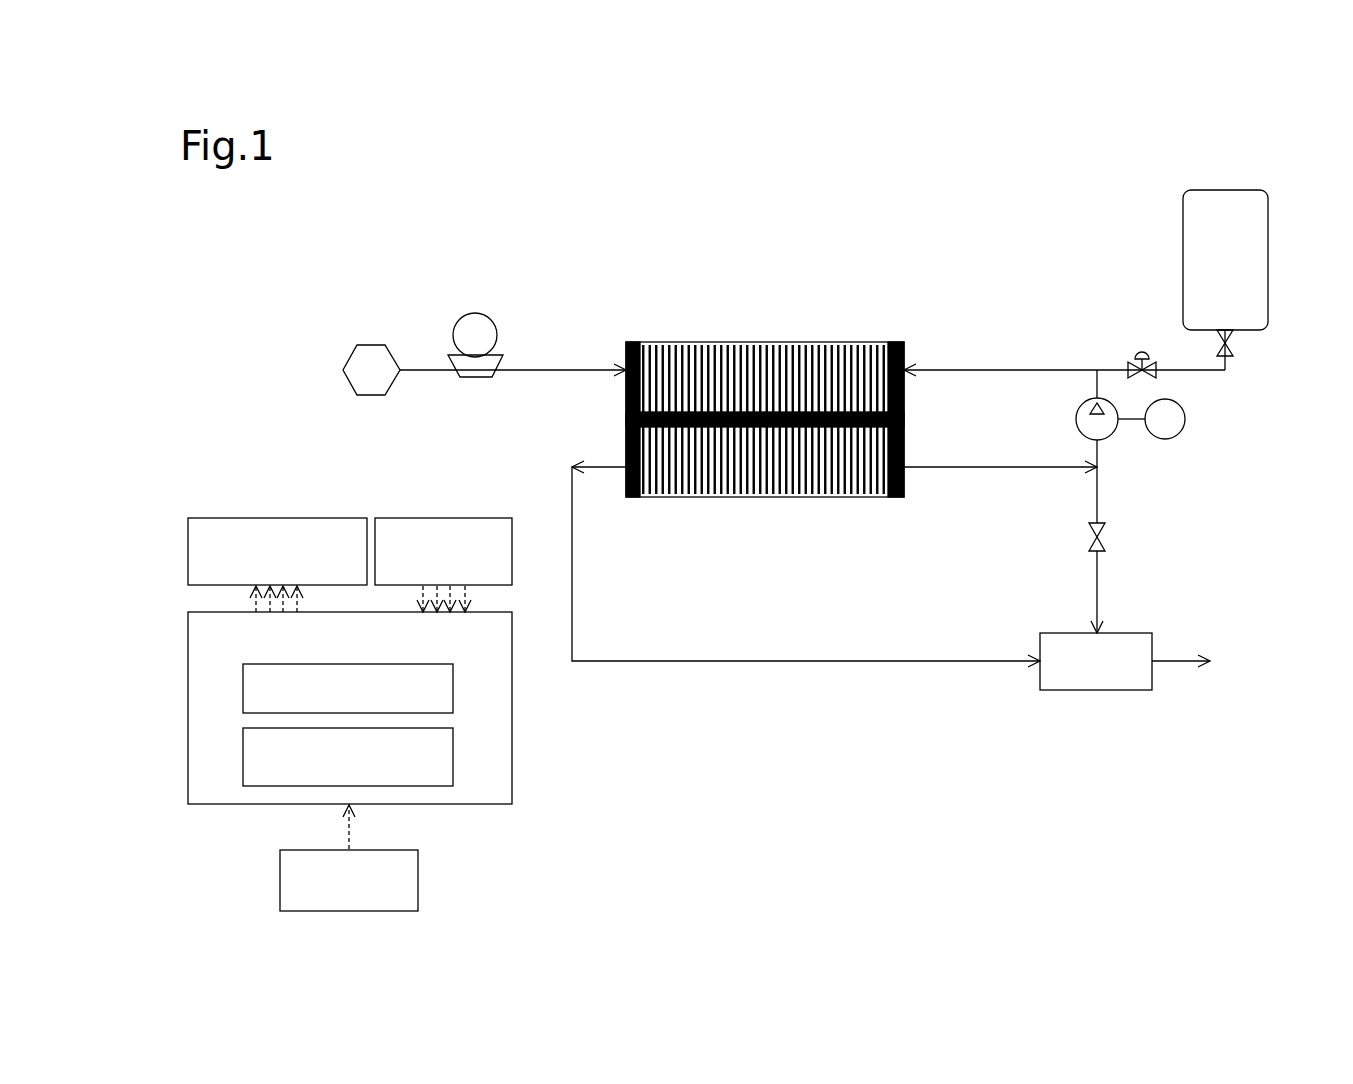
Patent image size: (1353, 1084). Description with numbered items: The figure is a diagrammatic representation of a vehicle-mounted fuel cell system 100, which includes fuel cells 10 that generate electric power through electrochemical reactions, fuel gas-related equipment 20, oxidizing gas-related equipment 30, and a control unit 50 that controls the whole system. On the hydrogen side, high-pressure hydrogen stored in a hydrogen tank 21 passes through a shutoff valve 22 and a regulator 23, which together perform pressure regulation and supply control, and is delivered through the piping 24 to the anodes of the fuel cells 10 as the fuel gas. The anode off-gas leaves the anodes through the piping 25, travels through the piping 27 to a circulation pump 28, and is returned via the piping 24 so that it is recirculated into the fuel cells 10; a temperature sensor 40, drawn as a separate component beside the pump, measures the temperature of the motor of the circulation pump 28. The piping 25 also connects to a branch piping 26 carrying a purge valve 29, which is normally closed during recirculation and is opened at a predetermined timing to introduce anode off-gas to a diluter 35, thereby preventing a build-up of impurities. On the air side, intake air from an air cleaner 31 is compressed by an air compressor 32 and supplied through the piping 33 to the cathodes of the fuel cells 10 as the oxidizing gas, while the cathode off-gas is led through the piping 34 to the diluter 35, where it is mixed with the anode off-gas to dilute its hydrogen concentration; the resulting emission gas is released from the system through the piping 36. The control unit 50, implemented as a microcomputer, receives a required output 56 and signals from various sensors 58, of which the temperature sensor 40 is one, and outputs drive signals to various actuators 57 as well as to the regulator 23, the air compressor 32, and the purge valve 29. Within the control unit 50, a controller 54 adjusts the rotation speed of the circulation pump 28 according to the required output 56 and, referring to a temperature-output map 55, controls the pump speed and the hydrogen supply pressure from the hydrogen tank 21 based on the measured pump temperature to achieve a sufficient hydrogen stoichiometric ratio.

The fuel cell system 100 is at (1028, 153).
The fuel cells 10 is at (746, 342).
The fuel gas-related equipment 20 is at (1210, 450).
The hydrogen tank 21 is at (1228, 190).
The shutoff valve 22 is at (1233, 346).
The regulator 23 is at (1142, 352).
The piping 24 is at (1050, 370).
The piping 25 is at (958, 467).
The branch piping 26 is at (1097, 493).
The piping 27 is at (1097, 455).
The circulation pump 28 is at (1078, 410).
The purge valve 29 is at (1105, 536).
The oxidizing gas-related equipment 30 is at (448, 408).
The air cleaner 31 is at (375, 345).
The air compressor 32 is at (478, 378).
The piping 33 is at (515, 368).
The piping 34 is at (740, 660).
The diluter 35 is at (1096, 690).
The piping 36 is at (1180, 659).
The temperature sensor 40 is at (1186, 406).
The control unit 50 is at (188, 625).
The controller 54 is at (243, 686).
The temperature-output map 55 is at (243, 748).
The required output 56 is at (418, 875).
The actuators 57 is at (262, 518).
The sensors 58 is at (424, 518).